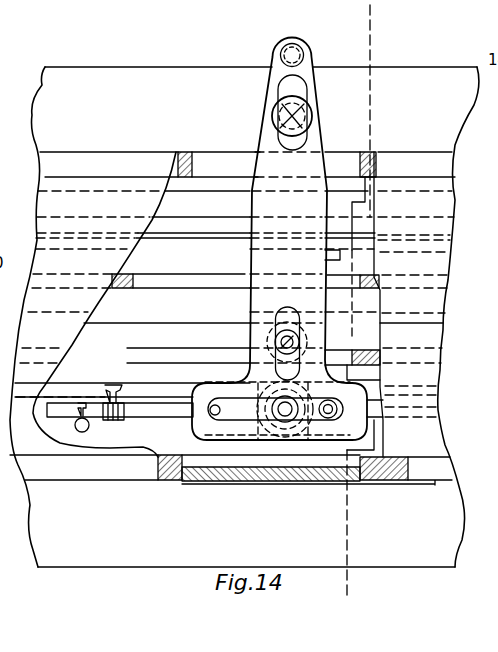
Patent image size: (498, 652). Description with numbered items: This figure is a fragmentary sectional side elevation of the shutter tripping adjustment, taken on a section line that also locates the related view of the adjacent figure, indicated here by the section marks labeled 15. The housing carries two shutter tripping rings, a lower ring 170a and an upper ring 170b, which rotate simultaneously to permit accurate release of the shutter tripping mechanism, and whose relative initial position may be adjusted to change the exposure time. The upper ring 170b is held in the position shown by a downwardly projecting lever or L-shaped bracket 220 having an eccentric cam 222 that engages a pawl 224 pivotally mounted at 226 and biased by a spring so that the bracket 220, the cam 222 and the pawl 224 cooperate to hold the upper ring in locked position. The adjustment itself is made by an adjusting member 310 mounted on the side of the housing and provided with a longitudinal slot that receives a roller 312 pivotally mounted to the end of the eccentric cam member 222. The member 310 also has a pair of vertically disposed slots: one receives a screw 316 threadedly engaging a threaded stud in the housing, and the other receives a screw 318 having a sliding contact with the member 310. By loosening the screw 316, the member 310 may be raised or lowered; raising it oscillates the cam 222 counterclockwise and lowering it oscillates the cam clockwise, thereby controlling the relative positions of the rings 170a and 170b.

The adjusting member 310 is at (318, 135).
The screw 316 is at (312, 112).
The screw 318 is at (292, 342).
The roller 312 is at (343, 415).
The lower ring 170a is at (385, 393).
The upper ring 170b is at (360, 244).
The L-shaped bracket 220 is at (246, 252).
The eccentric cam 222 is at (218, 413).
The pawl 224 is at (157, 412).
The pawl pivot 226 is at (105, 420).
The section line 15 is at (384, 41).